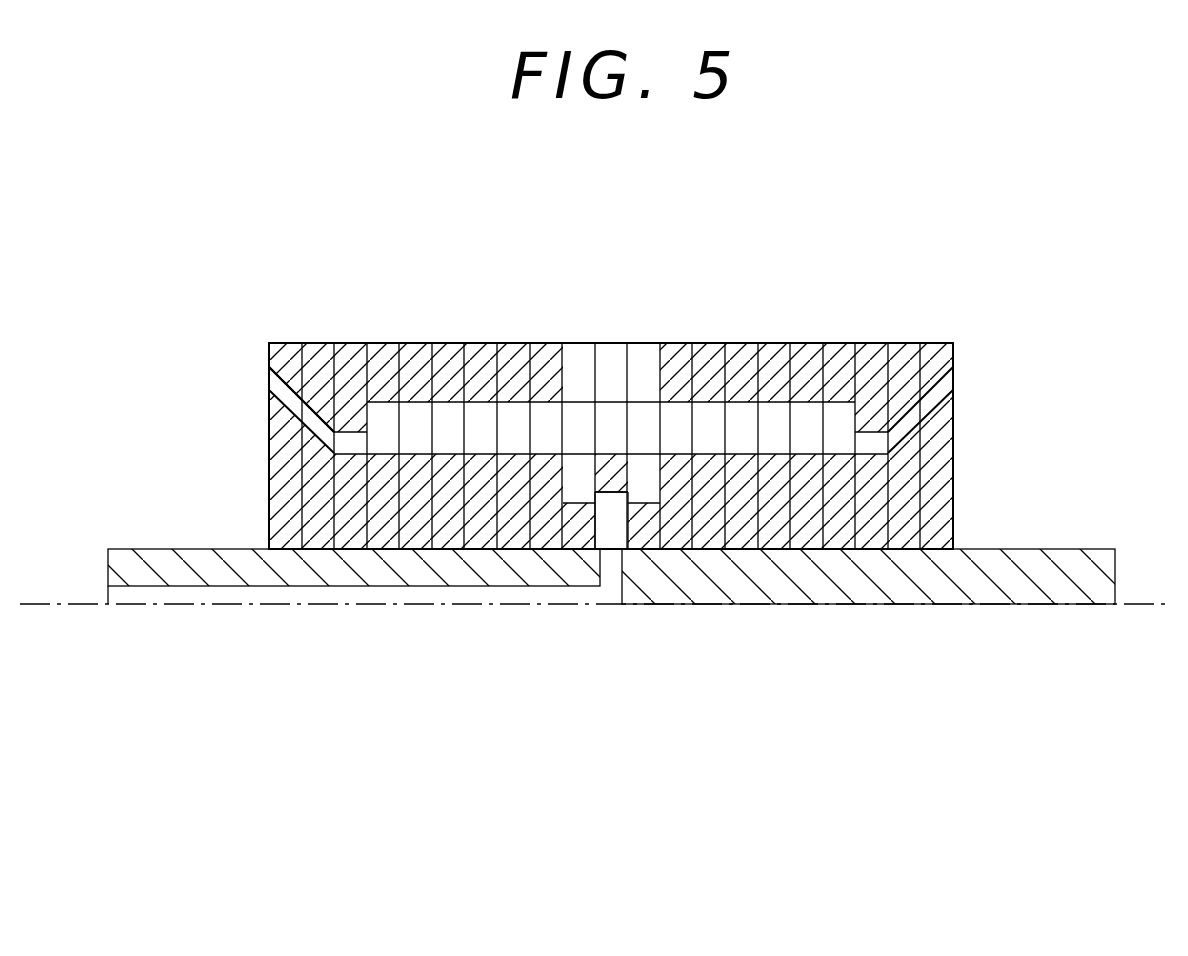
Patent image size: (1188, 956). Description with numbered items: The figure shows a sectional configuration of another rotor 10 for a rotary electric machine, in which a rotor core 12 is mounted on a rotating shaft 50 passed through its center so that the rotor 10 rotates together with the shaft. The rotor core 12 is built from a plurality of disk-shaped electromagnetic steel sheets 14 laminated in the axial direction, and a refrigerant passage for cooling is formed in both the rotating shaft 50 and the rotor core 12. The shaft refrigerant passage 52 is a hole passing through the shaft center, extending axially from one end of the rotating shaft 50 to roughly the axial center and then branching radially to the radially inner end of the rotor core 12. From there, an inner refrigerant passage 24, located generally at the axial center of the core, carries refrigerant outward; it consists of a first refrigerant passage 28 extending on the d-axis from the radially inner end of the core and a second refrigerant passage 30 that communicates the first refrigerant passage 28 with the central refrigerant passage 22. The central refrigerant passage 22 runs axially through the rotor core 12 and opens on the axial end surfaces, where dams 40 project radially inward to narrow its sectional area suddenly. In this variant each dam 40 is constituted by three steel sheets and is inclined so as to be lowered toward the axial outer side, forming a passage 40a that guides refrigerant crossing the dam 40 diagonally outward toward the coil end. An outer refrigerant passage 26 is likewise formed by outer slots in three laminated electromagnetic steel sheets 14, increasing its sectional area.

The rotor 10 is at (222, 332).
The rotor core 12 is at (925, 366).
The electromagnetic steel sheets 14 is at (347, 528).
The central refrigerant passage 22 is at (482, 445).
The inner refrigerant passage 24 is at (1050, 428).
The outer refrigerant passage 26 is at (605, 355).
The first refrigerant passage 28 is at (613, 533).
The second refrigerant passage 30 is at (647, 482).
The dam 40 is at (352, 415).
The passage 40a is at (282, 389).
The rotating shaft 50 is at (947, 593).
The shaft refrigerant passage 52 is at (160, 593).